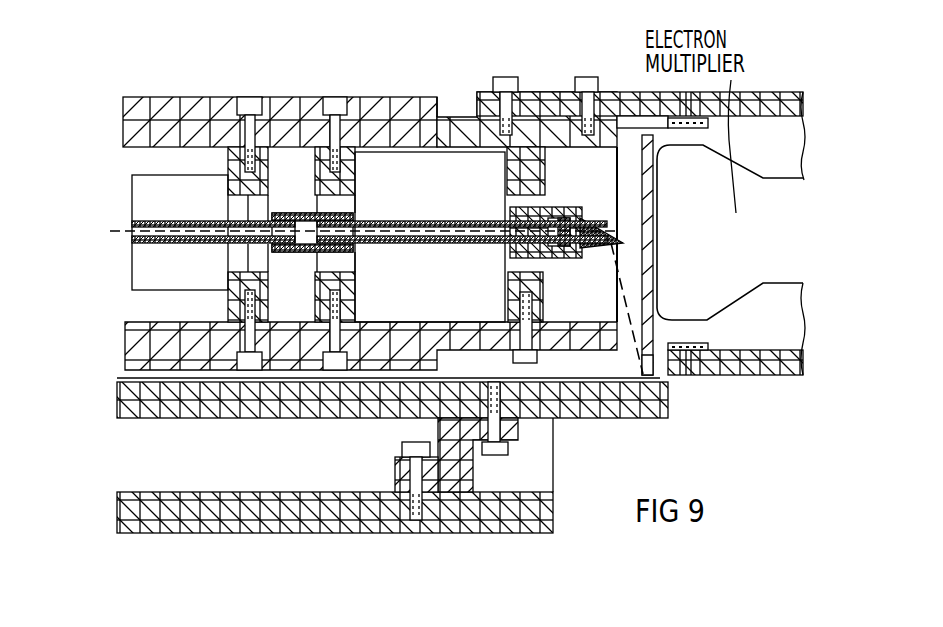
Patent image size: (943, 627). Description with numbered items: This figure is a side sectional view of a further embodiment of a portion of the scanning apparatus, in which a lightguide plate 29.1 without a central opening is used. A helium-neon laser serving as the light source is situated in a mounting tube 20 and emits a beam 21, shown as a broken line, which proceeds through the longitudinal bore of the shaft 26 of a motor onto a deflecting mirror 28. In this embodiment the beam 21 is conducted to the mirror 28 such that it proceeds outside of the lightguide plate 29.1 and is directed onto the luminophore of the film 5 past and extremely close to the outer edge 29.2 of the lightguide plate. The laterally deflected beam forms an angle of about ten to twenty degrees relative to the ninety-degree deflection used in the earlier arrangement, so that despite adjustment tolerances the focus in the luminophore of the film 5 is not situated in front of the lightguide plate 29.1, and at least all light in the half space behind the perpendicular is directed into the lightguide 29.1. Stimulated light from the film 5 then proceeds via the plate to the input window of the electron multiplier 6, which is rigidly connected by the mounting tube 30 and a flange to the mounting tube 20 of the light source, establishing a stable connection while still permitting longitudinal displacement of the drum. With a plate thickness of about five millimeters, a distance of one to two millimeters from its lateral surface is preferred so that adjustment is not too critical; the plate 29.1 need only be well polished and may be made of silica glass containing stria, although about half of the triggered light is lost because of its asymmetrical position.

The film 5 is at (620, 398).
The electron multiplier 6 is at (733, 285).
The mounting tube 20 is at (575, 400).
The beam 21 is at (402, 230).
The shaft 26 is at (414, 245).
The deflecting mirror 28 is at (608, 226).
The lightguide plate 29.1 is at (653, 274).
The outer edge of the lightguide plate 29.2 is at (666, 415).
The mounting tube 30 is at (657, 236).